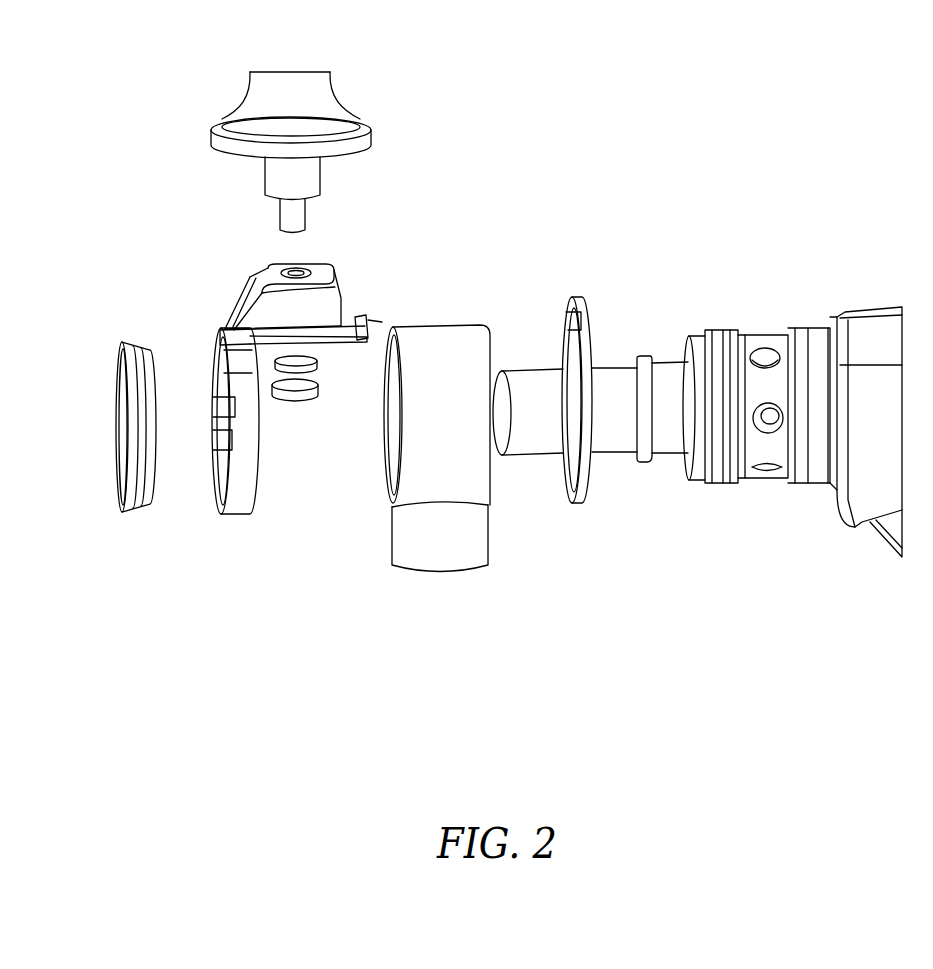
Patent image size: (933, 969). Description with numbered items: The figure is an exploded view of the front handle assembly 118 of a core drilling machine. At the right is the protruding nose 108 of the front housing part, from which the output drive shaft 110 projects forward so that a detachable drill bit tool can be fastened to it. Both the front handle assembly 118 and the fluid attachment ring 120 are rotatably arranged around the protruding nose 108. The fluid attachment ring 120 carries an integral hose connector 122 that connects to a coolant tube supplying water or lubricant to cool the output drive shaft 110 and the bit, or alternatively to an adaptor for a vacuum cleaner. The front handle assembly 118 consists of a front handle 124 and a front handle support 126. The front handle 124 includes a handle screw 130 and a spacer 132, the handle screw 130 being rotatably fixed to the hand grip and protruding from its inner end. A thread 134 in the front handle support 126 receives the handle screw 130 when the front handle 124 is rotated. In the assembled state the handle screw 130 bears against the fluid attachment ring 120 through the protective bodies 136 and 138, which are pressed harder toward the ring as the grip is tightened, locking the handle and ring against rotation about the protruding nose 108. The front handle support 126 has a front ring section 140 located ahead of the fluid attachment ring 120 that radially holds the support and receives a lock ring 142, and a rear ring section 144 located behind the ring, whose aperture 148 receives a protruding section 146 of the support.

The protruding nose 108 is at (758, 335).
The output drive shaft 110 is at (610, 368).
The front handle assembly 118 is at (238, 668).
The fluid attachment ring 120 is at (459, 323).
The hose connector 122 is at (478, 555).
The front handle 124 is at (333, 92).
The front handle support 126 is at (254, 282).
The handle screw 130 is at (307, 218).
The spacer 132 is at (266, 183).
The thread 134 is at (307, 268).
The protective body 136 is at (318, 364).
The protective body 138 is at (320, 390).
The front ring section 140 is at (241, 515).
The lock ring 142 is at (116, 445).
The rear ring section 144 is at (585, 488).
The protruding section 146 is at (385, 322).
The aperture 148 is at (566, 312).